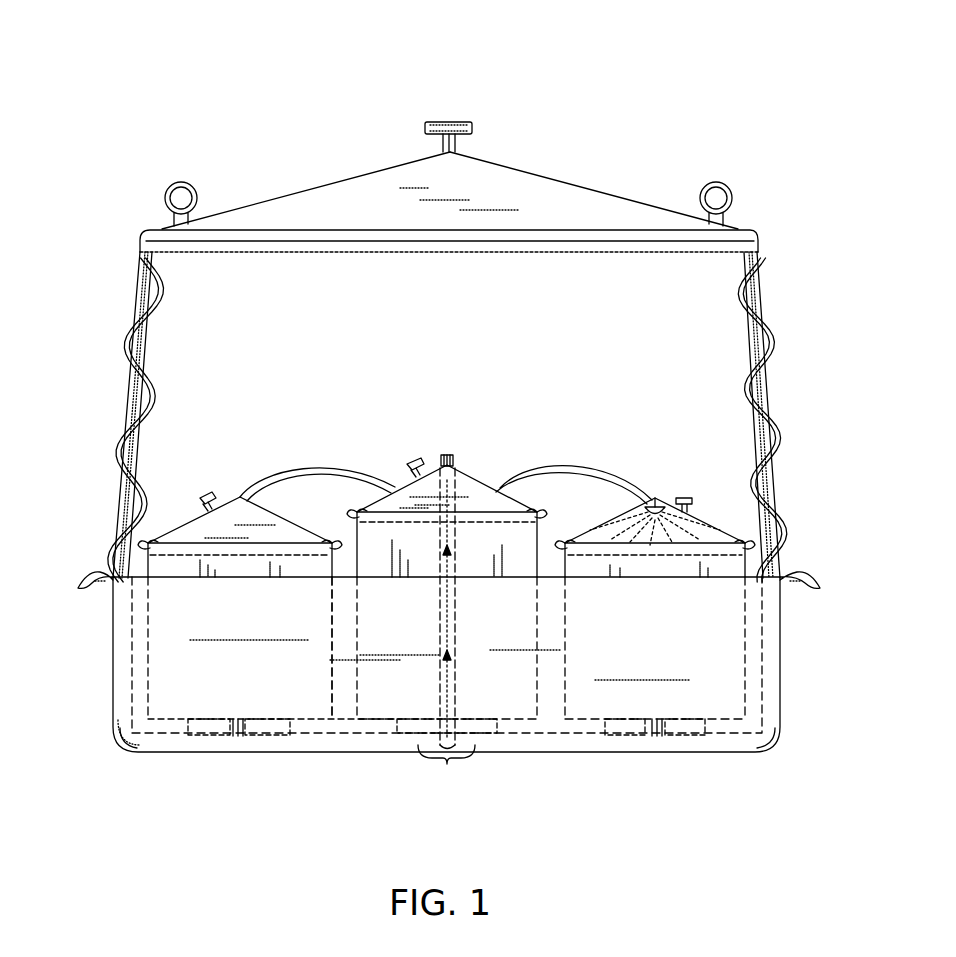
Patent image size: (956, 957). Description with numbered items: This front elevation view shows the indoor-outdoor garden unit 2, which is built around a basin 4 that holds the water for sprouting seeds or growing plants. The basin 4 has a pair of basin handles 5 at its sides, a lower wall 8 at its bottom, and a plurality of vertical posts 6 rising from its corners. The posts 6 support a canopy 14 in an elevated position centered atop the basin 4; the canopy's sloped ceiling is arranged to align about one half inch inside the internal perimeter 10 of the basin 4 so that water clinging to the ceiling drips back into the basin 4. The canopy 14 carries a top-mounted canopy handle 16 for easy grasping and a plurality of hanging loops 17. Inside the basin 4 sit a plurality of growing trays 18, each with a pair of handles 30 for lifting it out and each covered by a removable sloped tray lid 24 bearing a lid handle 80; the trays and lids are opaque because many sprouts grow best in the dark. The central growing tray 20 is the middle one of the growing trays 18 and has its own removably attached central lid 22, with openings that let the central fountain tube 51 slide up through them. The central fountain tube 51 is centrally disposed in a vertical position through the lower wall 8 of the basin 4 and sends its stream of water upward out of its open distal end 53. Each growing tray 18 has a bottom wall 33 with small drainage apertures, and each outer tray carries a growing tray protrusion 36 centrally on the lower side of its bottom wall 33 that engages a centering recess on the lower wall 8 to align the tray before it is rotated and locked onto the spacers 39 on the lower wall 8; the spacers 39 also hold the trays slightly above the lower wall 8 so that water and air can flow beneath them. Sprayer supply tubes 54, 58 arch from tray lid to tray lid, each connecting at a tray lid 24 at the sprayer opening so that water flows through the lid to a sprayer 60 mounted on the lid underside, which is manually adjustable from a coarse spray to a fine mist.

The indoor-outdoor garden unit 2 is at (548, 90).
The basin 4 is at (113, 654).
The basin handles 5 is at (96, 574).
The vertical posts 6 is at (762, 272).
The lower wall 8 is at (758, 738).
The internal perimeter 10 is at (762, 674).
The canopy 14 is at (537, 172).
The canopy handle 16 is at (452, 122).
The hanging loops 17 is at (181, 182).
The growing trays 18 is at (350, 580).
The central growing tray 20 is at (545, 545).
The central lid 22 is at (500, 490).
The tray lid 24 is at (216, 497).
The handles 30 is at (146, 542).
The bottom wall 33 is at (172, 712).
The growing tray protrusion 36 is at (252, 738).
The spacers 39 is at (200, 730).
The central fountain tube 51 is at (460, 461).
The open distal end 53 is at (449, 455).
The sprayer supply tube 54 is at (308, 462).
The sprayer supply tube 58 is at (614, 464).
The sprayer 60 is at (659, 500).
The lid handle 80 is at (198, 498).